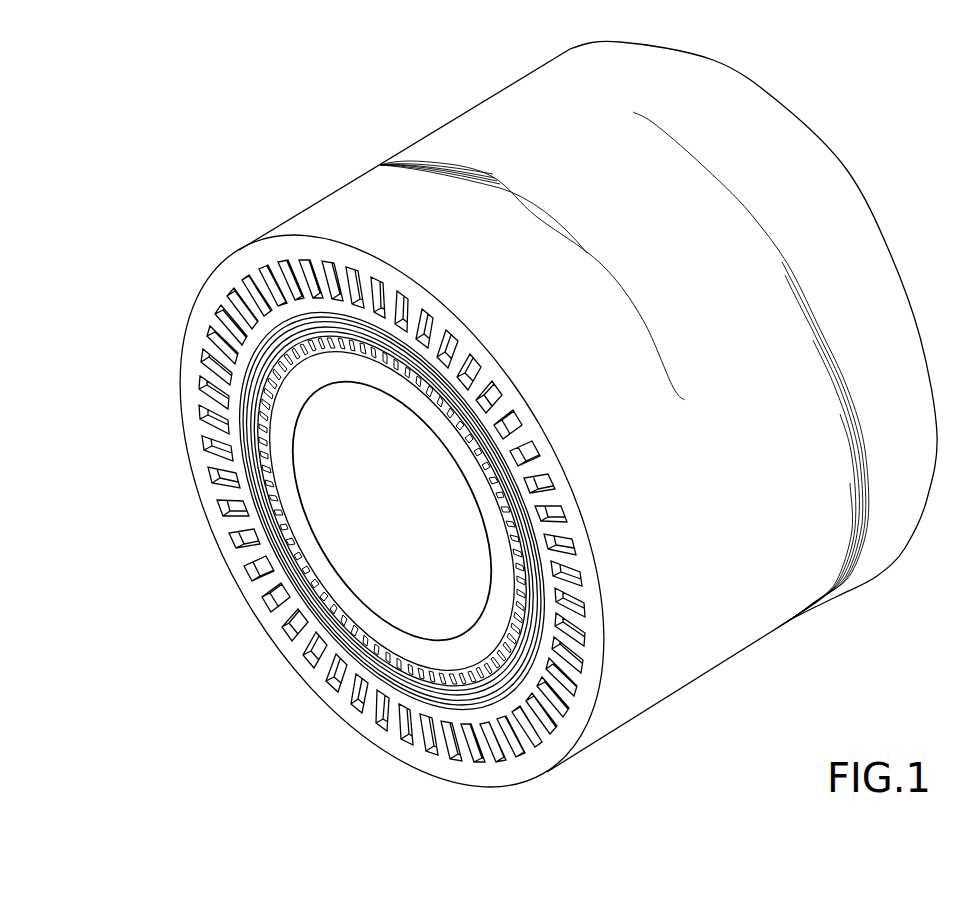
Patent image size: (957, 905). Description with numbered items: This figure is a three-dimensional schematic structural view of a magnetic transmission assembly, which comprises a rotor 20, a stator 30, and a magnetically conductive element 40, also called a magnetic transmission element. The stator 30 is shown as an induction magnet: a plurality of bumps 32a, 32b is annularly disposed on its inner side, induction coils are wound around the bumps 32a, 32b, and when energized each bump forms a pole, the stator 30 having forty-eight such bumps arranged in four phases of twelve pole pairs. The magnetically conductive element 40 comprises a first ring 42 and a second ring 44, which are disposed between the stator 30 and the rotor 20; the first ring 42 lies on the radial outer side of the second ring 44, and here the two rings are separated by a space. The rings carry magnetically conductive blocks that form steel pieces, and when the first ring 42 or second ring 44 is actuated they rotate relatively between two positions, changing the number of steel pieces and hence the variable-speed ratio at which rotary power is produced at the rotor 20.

The rotor 20 is at (290, 498).
The stator 30 is at (253, 259).
The bump 32a is at (330, 267).
The bump 32b is at (411, 303).
The magnetically conductive element 40 is at (347, 511).
The first ring 42 is at (247, 392).
The second ring 44 is at (267, 370).